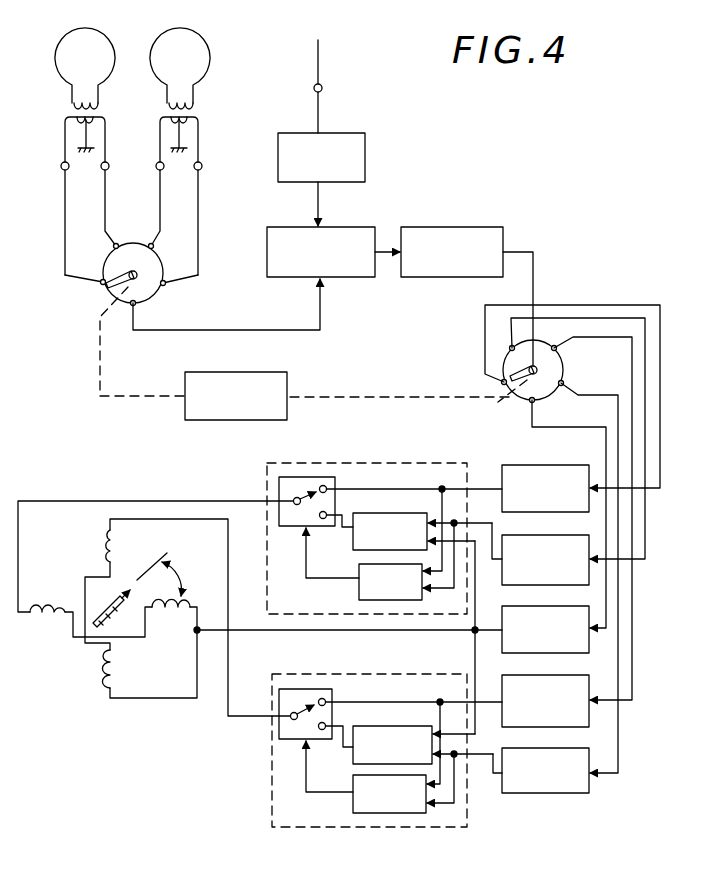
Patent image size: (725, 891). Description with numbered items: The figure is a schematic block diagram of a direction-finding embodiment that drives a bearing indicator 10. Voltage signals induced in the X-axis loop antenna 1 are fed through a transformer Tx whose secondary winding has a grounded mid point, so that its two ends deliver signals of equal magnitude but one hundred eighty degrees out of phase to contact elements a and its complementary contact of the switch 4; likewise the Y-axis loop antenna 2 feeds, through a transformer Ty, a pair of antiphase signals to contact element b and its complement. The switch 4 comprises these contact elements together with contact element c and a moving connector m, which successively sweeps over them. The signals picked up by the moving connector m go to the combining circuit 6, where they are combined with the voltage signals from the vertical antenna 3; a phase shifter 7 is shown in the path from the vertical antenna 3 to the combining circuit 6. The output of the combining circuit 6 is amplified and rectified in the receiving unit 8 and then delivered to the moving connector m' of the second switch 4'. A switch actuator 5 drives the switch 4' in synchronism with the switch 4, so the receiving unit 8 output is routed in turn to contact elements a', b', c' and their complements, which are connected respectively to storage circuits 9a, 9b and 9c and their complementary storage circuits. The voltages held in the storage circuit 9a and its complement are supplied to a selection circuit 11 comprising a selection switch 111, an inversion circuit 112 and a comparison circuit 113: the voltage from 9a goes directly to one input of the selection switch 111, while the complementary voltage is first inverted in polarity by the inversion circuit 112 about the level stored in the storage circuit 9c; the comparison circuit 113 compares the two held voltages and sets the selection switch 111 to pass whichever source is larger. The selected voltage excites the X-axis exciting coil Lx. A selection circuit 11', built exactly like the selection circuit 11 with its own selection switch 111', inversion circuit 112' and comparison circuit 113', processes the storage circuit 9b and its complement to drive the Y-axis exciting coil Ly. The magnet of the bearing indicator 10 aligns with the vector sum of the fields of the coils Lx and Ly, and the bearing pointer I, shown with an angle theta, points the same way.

The X-axis loop antenna 1 is at (83, 32).
The Y-axis loop antenna 2 is at (198, 36).
The vertical antenna 3 is at (322, 75).
The switch 4 is at (131, 319).
The switch 4' is at (526, 386).
The switch actuator 5 is at (258, 372).
The combining circuit 6 is at (351, 227).
The phase shifter 7 is at (367, 151).
The receiving unit 8 is at (473, 227).
The storage circuit 9a is at (538, 465).
The storage circuit 9b is at (576, 675).
The storage circuit 9c is at (548, 606).
The bearing indicator 10 is at (166, 674).
The selection circuit 11 is at (367, 526).
The selection circuit 11' is at (319, 735).
The selection switch 111 is at (307, 482).
The selection switch 111' is at (313, 695).
The inversion circuit 112 is at (390, 520).
The inversion circuit 112' is at (392, 735).
The comparison circuit 113 is at (367, 584).
The comparison circuit 113' is at (384, 814).
The transformer Tx is at (103, 119).
The transformer Ty is at (199, 119).
The X-axis exciting coil Lx is at (50, 622).
The Y-axis exciting coil Ly is at (105, 548).
The bearing pointer I is at (129, 588).
The angle theta is at (161, 574).
The contact element a is at (90, 295).
The contact element b is at (164, 242).
The contact element c is at (226, 304).
The moving connector m is at (121, 268).
The contact element a' is at (560, 396).
The contact element b' is at (590, 489).
The contact element c' is at (568, 513).
The moving connector m' is at (494, 371).